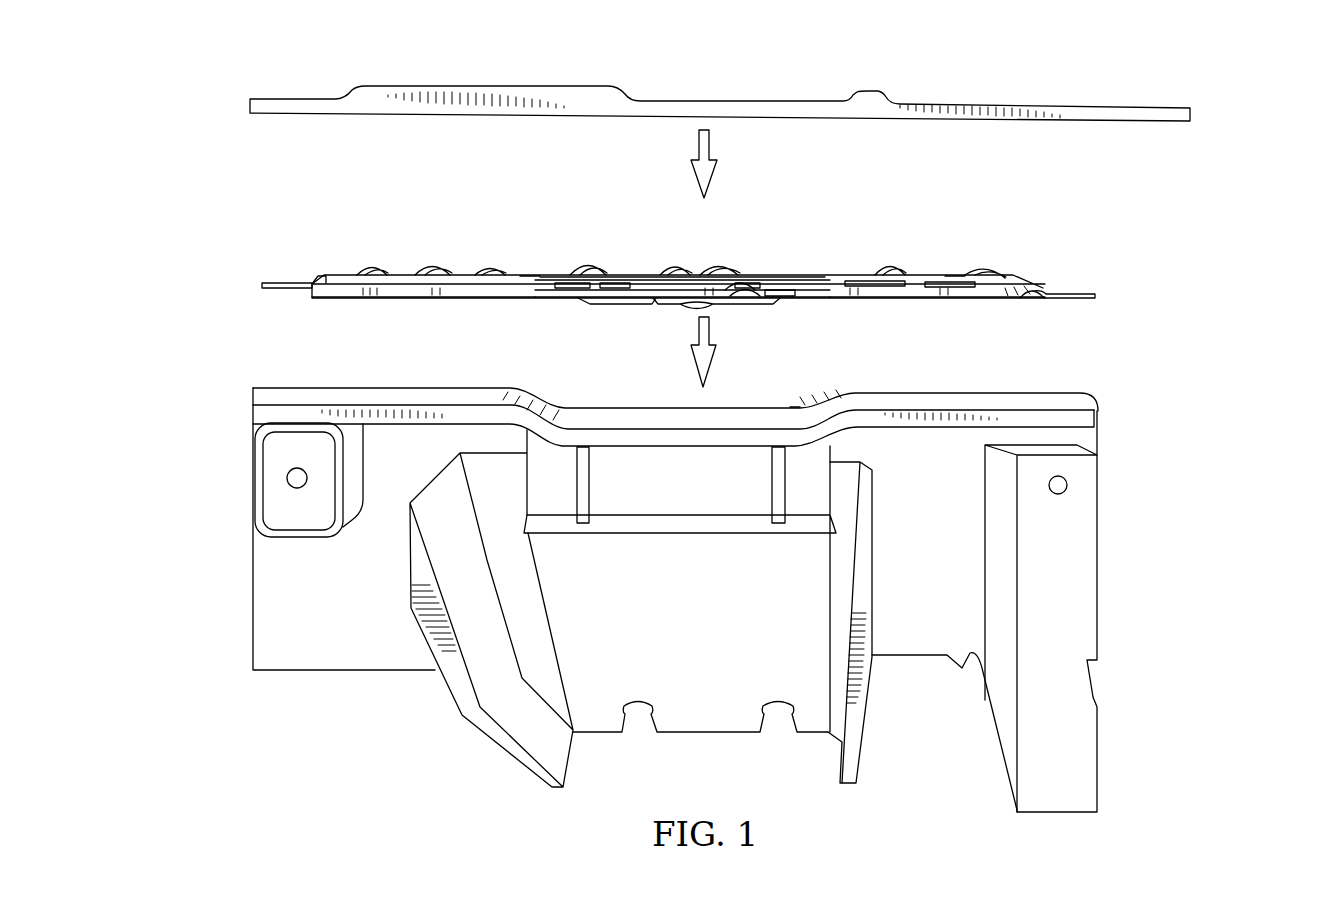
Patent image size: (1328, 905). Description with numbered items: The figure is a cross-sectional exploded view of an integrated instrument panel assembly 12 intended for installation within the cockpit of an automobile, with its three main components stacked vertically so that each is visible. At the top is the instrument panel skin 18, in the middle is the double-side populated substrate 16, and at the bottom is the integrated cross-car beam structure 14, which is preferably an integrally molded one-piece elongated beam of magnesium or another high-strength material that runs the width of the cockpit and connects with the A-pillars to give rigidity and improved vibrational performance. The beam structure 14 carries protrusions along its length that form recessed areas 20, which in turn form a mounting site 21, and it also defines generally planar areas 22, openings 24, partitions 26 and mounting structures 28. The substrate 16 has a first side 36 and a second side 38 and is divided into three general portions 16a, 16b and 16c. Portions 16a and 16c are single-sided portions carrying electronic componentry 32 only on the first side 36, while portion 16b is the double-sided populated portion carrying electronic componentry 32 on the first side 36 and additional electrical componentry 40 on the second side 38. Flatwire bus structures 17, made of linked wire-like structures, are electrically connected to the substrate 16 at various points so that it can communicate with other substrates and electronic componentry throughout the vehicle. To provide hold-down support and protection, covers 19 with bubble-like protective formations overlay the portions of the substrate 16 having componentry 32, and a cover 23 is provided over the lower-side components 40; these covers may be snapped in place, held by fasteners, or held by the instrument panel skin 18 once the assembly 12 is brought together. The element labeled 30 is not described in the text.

The instrument panel assembly 12 is at (1250, 85).
The cross-car beam structure 14 is at (1135, 443).
The double-side populated substrate 16 is at (1063, 268).
The single-sided portion of substrate 16a is at (489, 238).
The double-sided populated portion of substrate 16b is at (716, 216).
The single-sided portion of substrate 16c is at (1013, 236).
The flatwire bus structure 17 is at (278, 283).
The instrument panel skin 18 is at (1155, 100).
The cover 19 is at (530, 270).
The recessed area 20 is at (678, 392).
The mounting site 21 is at (778, 385).
The generally planar area 22 is at (642, 413).
The cover 23 is at (780, 300).
The opening 24 is at (692, 497).
The partition 26 is at (588, 493).
The mounting structure 28 is at (773, 723).
The wire retention clips 30 is at (403, 262).
The electronic componentry 32 is at (733, 290).
The first side 36 is at (639, 270).
The second side 38 is at (605, 300).
The electrical componentry 40 is at (750, 300).